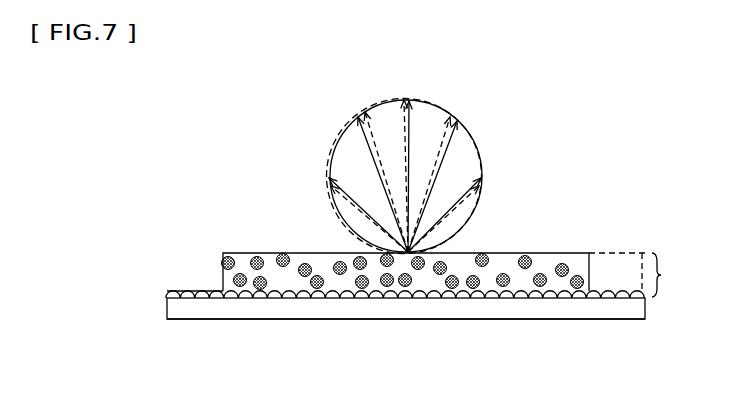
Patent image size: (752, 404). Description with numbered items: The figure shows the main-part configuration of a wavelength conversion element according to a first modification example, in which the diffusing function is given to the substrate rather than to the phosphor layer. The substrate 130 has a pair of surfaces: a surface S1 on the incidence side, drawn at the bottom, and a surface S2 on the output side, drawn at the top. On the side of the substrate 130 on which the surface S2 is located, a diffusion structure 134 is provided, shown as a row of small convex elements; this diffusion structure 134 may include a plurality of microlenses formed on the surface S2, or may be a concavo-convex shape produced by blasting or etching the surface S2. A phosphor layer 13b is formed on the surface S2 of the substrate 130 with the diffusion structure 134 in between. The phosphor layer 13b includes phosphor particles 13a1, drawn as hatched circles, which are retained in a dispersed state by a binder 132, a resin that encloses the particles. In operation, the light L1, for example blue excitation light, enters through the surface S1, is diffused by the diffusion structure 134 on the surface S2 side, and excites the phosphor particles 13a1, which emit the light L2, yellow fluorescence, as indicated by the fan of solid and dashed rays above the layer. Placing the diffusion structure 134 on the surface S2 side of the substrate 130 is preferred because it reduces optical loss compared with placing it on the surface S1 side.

The substrate 130 is at (645, 312).
The phosphor particles 13a1 is at (482, 266).
The phosphor layer 13b is at (465, 275).
The diffusion structure 134 is at (609, 292).
The binder 132 is at (340, 285).
The surface on incidence side S1 is at (190, 320).
The surface on output side S2 is at (189, 290).
The light L1 is at (462, 118).
The light L2 is at (483, 150).